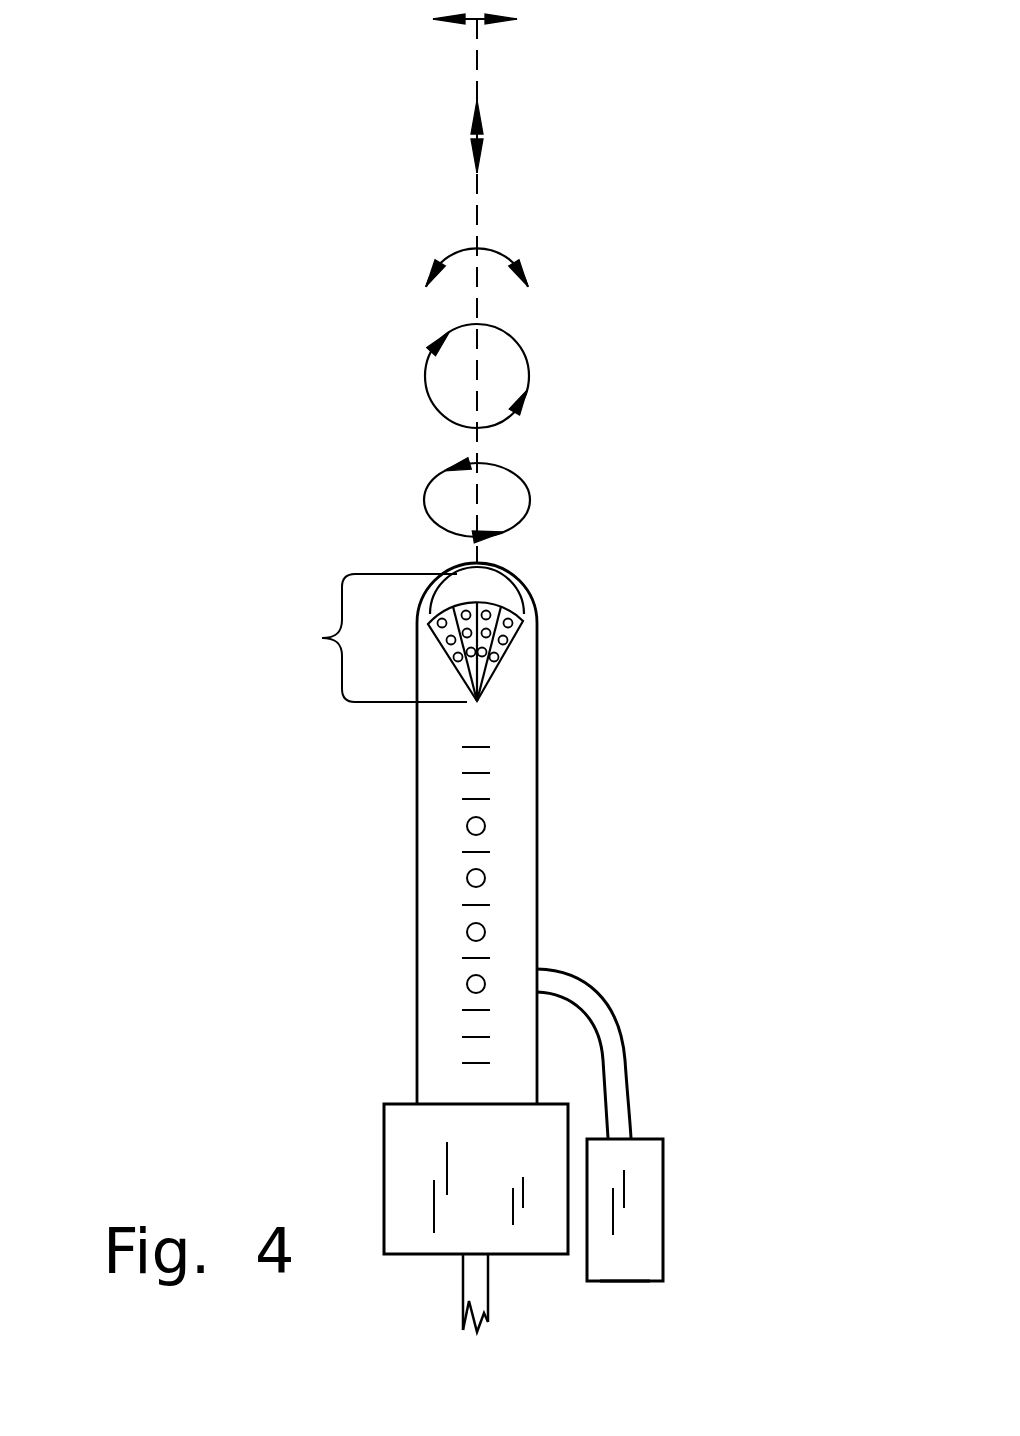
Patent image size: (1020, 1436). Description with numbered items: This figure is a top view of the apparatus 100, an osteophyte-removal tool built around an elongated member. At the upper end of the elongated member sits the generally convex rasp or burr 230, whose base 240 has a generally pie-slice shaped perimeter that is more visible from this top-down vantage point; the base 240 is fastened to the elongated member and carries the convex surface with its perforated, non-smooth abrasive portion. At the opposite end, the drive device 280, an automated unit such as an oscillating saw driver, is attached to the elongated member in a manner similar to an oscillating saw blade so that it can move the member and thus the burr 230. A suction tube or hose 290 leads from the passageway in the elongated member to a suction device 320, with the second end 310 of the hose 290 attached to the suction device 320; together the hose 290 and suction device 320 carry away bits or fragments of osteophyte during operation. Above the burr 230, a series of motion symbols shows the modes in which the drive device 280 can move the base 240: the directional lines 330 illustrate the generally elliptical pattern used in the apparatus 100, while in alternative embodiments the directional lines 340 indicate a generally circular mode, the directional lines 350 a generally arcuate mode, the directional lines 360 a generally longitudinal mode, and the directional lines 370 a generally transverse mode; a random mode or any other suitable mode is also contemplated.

The apparatus 100 is at (606, 442).
The burr 230 is at (321, 638).
The base 240 is at (513, 650).
The drive device 280 is at (383, 1167).
The suction tube or hose 290 is at (666, 988).
The second end of hose 310 is at (633, 1138).
The suction device 320 is at (627, 1283).
The directional lines 330 is at (368, 500).
The directional lines 340 is at (368, 372).
The directional lines 350 is at (368, 266).
The directional lines 360 is at (368, 127).
The directional lines 370 is at (368, 19).